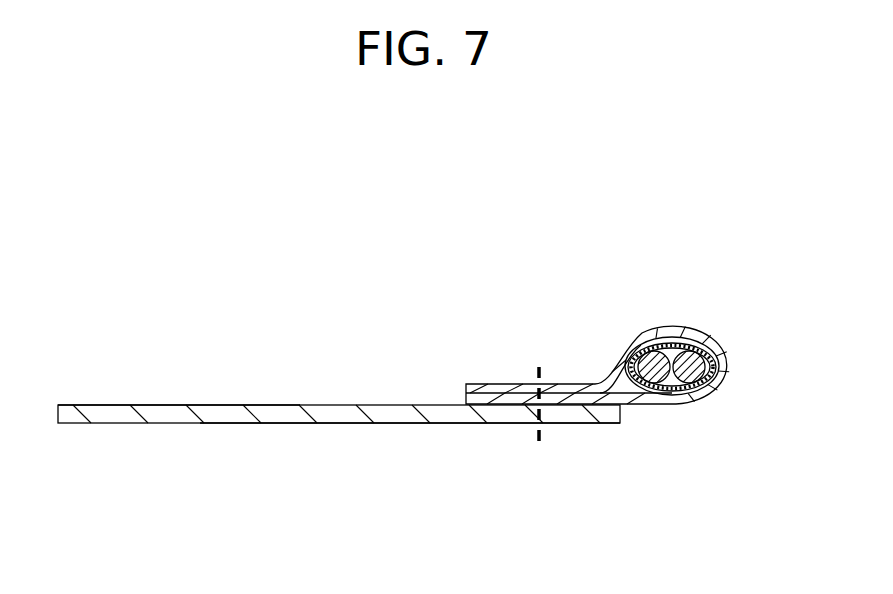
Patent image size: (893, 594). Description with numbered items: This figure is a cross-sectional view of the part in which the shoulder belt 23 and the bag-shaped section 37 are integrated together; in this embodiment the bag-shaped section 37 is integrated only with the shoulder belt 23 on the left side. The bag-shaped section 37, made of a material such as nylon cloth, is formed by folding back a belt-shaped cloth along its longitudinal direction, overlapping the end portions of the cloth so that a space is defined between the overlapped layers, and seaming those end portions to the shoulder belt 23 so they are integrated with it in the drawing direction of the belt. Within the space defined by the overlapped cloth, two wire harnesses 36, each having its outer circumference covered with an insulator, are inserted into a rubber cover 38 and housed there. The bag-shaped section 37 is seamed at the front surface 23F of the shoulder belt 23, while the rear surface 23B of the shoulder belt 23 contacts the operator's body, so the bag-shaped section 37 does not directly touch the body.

The shoulder belt 23 is at (263, 410).
The front surface 23F is at (158, 404).
The rear surface 23B is at (337, 425).
The bag-shaped section 37 is at (671, 333).
The rubber cover 38 is at (715, 347).
The wire harnesses 36 is at (688, 372).